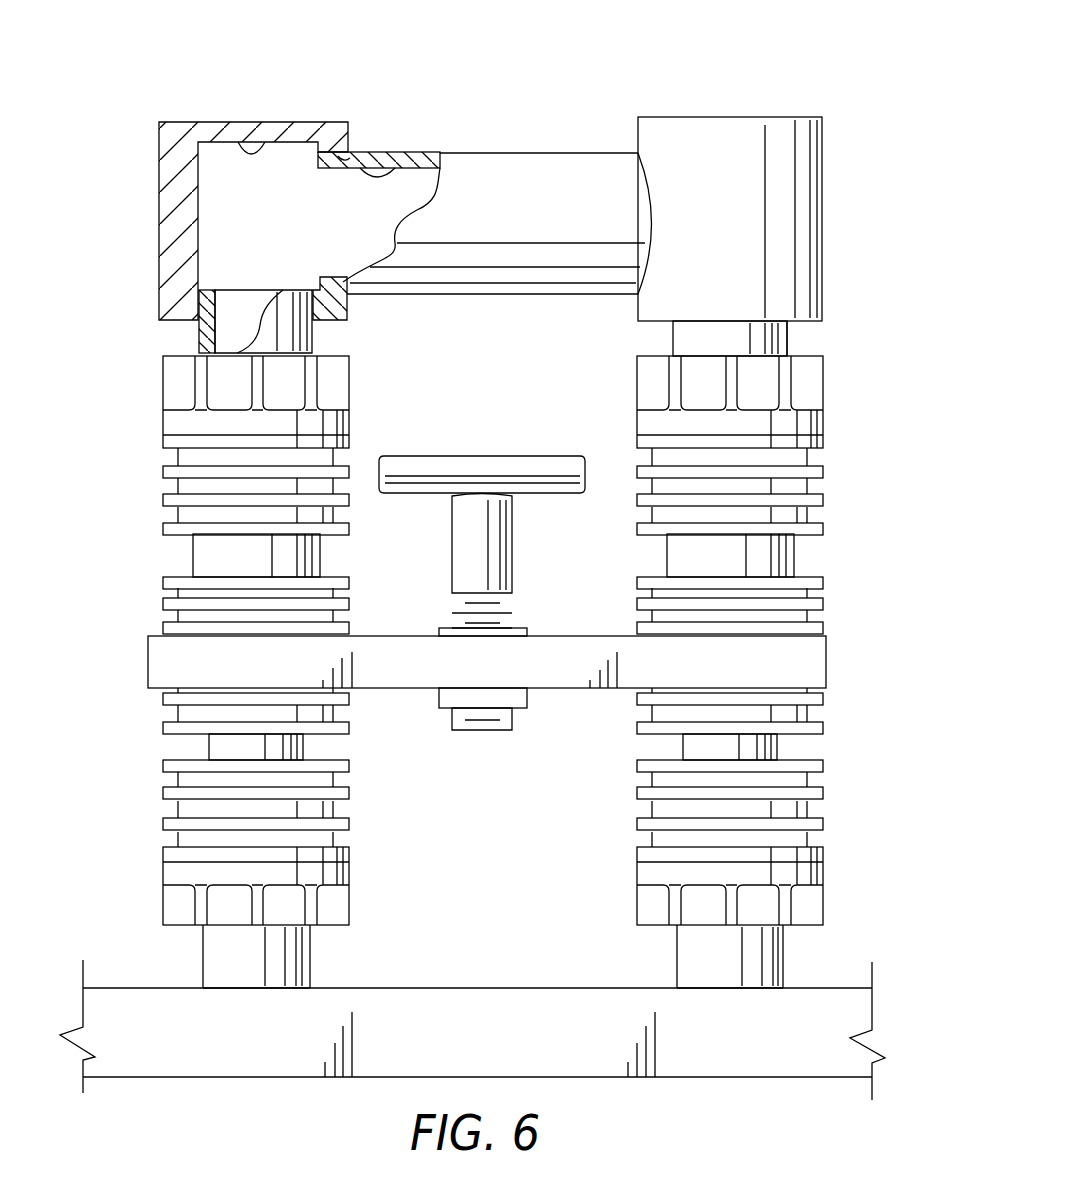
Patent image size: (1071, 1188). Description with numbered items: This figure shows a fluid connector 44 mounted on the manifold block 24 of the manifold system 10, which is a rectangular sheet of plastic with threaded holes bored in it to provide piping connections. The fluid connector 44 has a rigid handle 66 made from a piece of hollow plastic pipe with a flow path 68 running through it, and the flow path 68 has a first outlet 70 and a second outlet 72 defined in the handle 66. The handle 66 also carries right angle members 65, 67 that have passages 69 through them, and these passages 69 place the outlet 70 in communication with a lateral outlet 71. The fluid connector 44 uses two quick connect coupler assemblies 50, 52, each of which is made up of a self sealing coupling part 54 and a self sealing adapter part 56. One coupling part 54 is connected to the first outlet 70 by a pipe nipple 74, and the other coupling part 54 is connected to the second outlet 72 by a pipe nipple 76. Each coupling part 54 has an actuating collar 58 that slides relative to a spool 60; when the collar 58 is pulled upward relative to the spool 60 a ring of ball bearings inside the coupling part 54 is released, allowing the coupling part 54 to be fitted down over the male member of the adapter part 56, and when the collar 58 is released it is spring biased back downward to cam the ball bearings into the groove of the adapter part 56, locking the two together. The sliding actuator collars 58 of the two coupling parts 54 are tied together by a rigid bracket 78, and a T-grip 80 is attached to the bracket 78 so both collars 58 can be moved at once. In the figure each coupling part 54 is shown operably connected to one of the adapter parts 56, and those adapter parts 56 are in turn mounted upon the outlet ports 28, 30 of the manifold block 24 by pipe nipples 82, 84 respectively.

The fluid connector 44 is at (772, 62).
The right angle member 65 is at (165, 140).
The passage 69 is at (258, 148).
The lateral outlet 71 is at (348, 157).
The flow path 68 is at (395, 167).
The rigid handle 66 is at (517, 162).
The right angle member 67 is at (813, 153).
The first outlet 70 is at (198, 320).
The pipe nipple 74 is at (313, 337).
The pipe nipple 76 is at (677, 342).
The second outlet 72 is at (790, 322).
The self sealing coupling part 54 is at (350, 380).
The self sealing adapter part 56 is at (350, 880).
The actuating collar 58 is at (822, 583).
The spool 60 is at (200, 550).
The quick connect coupler assembly 50 is at (165, 442).
The quick connect coupler assembly 52 is at (822, 423).
The rigid bracket 78 is at (375, 680).
The T-grip 80 is at (530, 487).
The pipe nipple 82 is at (222, 953).
The pipe nipple 84 is at (695, 947).
The outlet port 28 is at (310, 988).
The outlet port 30 is at (783, 988).
The manifold system 10 is at (125, 1003).
The manifold block 24 is at (472, 1003).